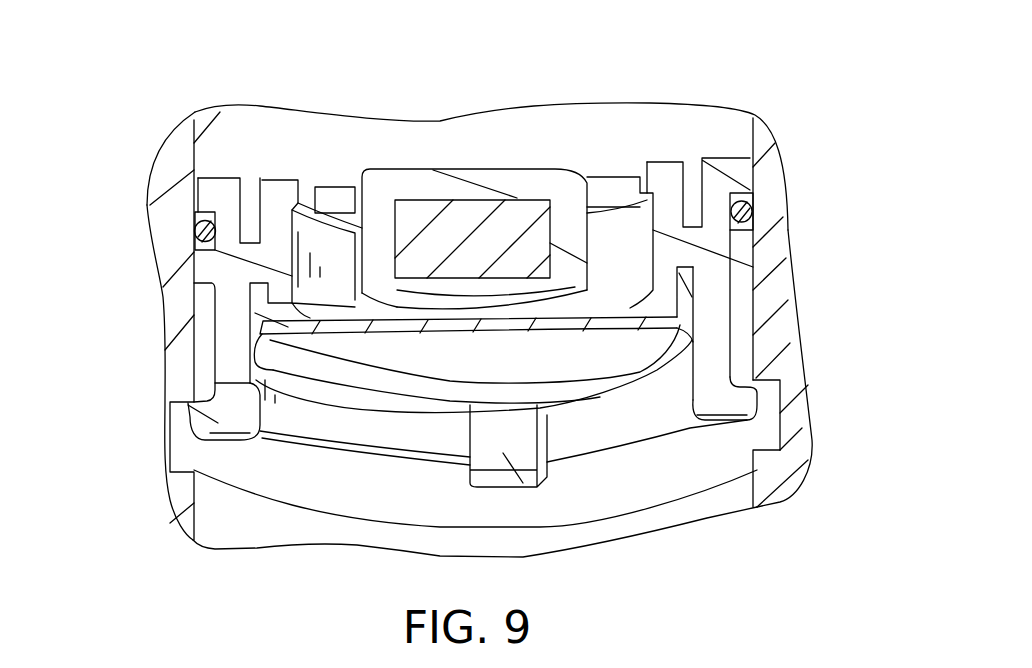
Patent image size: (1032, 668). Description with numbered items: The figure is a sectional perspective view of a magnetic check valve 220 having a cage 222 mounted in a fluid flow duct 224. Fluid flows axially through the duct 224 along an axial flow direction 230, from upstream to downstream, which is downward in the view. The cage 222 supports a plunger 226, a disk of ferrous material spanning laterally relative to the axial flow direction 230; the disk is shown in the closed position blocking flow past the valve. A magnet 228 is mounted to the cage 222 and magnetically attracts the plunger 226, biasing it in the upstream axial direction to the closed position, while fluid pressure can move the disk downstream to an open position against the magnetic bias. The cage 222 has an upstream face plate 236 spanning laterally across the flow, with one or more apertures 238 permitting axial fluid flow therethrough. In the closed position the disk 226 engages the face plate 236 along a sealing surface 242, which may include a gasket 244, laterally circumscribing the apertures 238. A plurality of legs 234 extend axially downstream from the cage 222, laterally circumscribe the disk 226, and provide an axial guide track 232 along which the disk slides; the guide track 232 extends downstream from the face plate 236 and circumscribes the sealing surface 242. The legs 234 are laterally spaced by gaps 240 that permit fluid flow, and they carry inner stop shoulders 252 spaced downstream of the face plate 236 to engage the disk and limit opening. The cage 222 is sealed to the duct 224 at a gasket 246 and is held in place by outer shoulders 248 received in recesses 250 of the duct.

The magnetic check valve 220 is at (140, 270).
The cage 222 is at (232, 344).
The fluid flow duct 224 is at (197, 140).
The plunger 226 is at (543, 323).
The magnet 228 is at (503, 217).
The axial flow direction 230 is at (335, 160).
The axial guide track 232 is at (257, 377).
The legs 234 is at (720, 345).
The upstream face plate 236 is at (292, 183).
The apertures 238 is at (346, 186).
The gaps 240 is at (645, 430).
The sealing surface 242 is at (695, 309).
The gasket 244 is at (693, 273).
The gasket 246 is at (743, 207).
The outer shoulders 248 is at (743, 394).
The recesses 250 is at (765, 433).
The inner stop shoulders 252 is at (263, 422).